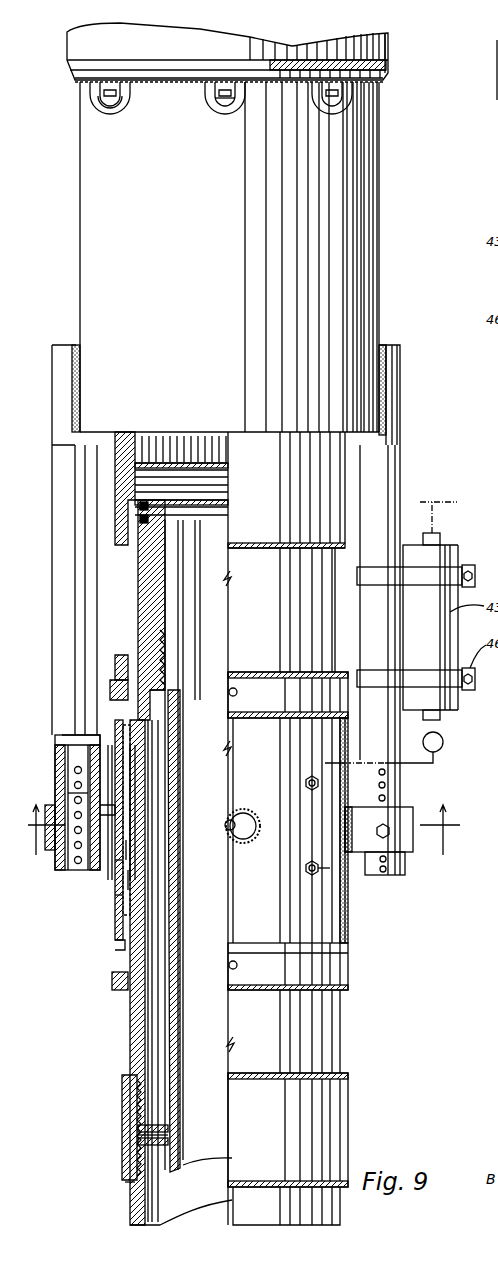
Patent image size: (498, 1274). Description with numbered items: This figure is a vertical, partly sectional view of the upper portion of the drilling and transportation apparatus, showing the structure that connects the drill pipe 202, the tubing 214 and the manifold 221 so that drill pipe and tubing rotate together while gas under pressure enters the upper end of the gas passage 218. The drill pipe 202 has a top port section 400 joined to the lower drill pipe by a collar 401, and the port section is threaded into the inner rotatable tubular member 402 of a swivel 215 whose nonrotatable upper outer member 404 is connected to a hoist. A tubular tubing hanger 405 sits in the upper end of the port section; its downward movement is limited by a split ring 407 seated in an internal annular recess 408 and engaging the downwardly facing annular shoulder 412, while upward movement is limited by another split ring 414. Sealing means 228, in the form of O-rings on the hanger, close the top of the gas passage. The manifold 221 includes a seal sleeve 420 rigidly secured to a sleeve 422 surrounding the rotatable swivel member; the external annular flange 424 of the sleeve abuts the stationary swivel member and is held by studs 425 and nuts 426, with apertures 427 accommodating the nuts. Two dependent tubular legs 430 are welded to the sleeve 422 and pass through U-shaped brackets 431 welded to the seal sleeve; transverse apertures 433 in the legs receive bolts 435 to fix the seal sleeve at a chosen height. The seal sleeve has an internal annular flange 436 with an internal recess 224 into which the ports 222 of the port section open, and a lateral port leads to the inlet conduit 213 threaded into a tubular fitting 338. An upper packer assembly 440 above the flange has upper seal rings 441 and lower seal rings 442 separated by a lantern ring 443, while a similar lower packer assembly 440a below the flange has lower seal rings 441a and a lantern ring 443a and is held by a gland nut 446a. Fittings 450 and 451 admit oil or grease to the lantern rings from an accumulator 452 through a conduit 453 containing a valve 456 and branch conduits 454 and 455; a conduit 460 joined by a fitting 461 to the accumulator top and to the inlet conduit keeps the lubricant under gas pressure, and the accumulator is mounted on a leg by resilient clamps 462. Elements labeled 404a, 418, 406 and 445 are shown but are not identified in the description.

The nonrotatable upper outer member 404 is at (78, 40).
The cap extension 404a is at (497, 68).
The swivel 215 is at (396, 44).
The external annular flange 424 is at (75, 78).
The studs 425 is at (222, 84).
The nuts 426 is at (98, 95).
The apertures 427 is at (232, 100).
The sleeve 422 is at (82, 258).
The dependent tubular legs 430 is at (52, 355).
The inner rotatable tubular member 402 is at (130, 432).
The threads 418 is at (174, 436).
The split ring 414 is at (222, 498).
The sealing means 228 is at (150, 518).
The tubular tubing hanger 405 is at (155, 600).
The split ring 407 is at (120, 656).
The spacer 406 is at (132, 660).
The downwardly facing annular shoulder 412 is at (160, 672).
The internal annular recess 408 is at (152, 684).
The seal sleeve 420 is at (345, 925).
The resilient clamps 462 is at (440, 545).
The conduit 460 is at (457, 502).
The fitting 461 is at (457, 502).
The conduit 453 is at (433, 763).
The valve 456 is at (443, 740).
The branch conduit 454 is at (318, 778).
The fitting 450 is at (309, 777).
The fitting 451 is at (308, 872).
The branch conduit 455 is at (322, 876).
The tubular fitting 338 is at (247, 811).
The inlet conduit 213 is at (250, 832).
The bolts 435 is at (389, 831).
The U-shaped brackets 431 is at (50, 815).
The upper packer assembly 440 is at (76, 726).
The transverse apertures 433 is at (58, 780).
The connecting bar 445 is at (78, 792).
The upper seal rings 441 is at (122, 756).
The lantern ring 443 is at (126, 772).
The lower seal rings 442 is at (126, 788).
The internal annular flange 436 is at (130, 802).
The internal annular passage 224 is at (132, 816).
The lantern ring 443a is at (128, 848).
The accumulator 452 is at (132, 880).
The ports 222 is at (112, 840).
The lower seal rings 441a is at (118, 872).
The manifold 221 is at (110, 902).
The lower packer assembly 440a is at (122, 920).
The gland nut 446a is at (112, 986).
The top port section 400 is at (140, 994).
The gas passage 218 is at (158, 1010).
The tubing 214 is at (172, 1026).
The collar 401 is at (128, 1130).
The drill pipe 202 is at (124, 1206).